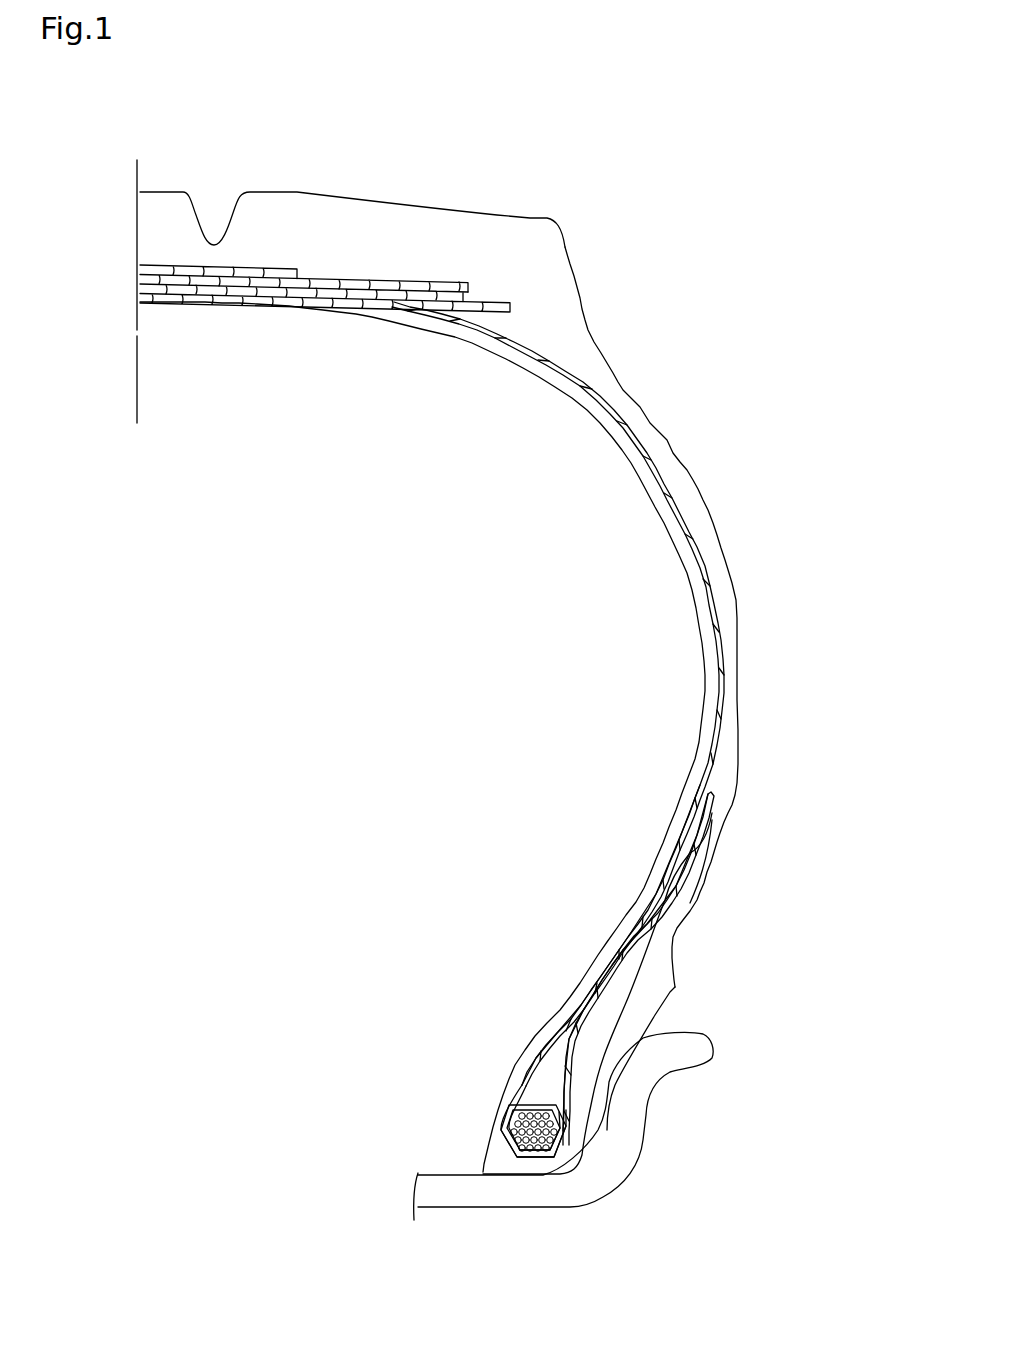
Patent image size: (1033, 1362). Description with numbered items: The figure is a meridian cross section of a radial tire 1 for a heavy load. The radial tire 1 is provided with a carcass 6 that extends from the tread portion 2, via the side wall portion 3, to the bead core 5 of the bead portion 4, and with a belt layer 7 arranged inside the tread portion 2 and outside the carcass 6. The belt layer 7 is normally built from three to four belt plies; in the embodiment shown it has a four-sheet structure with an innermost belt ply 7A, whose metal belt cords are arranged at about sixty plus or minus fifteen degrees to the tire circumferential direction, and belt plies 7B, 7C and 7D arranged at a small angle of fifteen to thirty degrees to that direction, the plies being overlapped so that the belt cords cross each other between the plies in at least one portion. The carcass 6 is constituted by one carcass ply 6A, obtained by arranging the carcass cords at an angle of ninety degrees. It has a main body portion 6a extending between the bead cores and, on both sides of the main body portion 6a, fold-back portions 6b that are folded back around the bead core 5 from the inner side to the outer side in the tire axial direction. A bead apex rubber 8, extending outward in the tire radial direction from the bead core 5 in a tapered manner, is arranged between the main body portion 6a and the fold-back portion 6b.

The radial tire 1 is at (845, 260).
The tread portion 2 is at (410, 167).
The side wall portion 3 is at (756, 667).
The bead portion 4 is at (478, 1078).
The bead core 5 is at (518, 1127).
The carcass 6 is at (563, 752).
The carcass ply 6A is at (558, 729).
The main body portion 6a is at (710, 750).
The fold-back portion 6b is at (680, 847).
The belt layer 7 is at (309, 365).
The innermost belt ply 7A is at (160, 300).
The belt ply 7B is at (216, 292).
The belt ply 7C is at (248, 283).
The belt ply 7D is at (290, 274).
The bead apex rubber 8 is at (553, 1068).